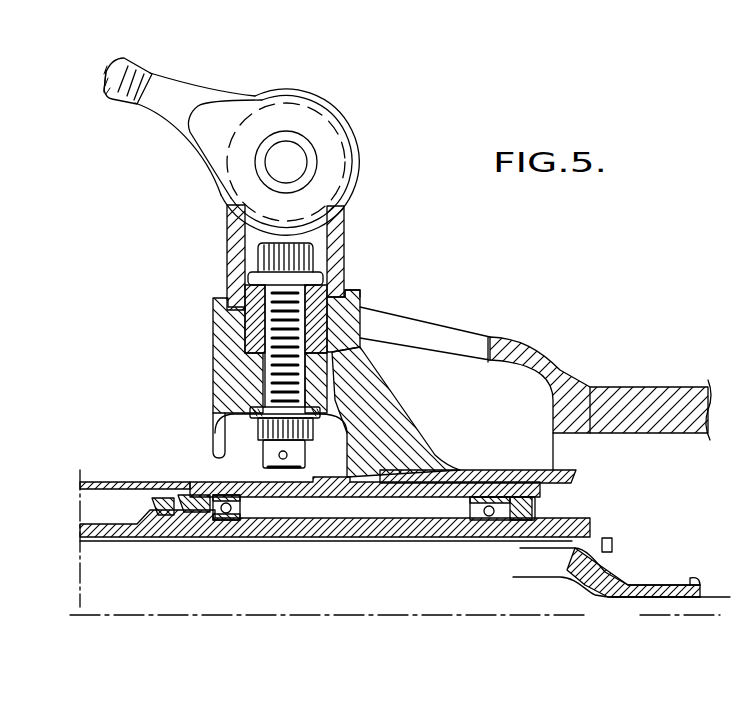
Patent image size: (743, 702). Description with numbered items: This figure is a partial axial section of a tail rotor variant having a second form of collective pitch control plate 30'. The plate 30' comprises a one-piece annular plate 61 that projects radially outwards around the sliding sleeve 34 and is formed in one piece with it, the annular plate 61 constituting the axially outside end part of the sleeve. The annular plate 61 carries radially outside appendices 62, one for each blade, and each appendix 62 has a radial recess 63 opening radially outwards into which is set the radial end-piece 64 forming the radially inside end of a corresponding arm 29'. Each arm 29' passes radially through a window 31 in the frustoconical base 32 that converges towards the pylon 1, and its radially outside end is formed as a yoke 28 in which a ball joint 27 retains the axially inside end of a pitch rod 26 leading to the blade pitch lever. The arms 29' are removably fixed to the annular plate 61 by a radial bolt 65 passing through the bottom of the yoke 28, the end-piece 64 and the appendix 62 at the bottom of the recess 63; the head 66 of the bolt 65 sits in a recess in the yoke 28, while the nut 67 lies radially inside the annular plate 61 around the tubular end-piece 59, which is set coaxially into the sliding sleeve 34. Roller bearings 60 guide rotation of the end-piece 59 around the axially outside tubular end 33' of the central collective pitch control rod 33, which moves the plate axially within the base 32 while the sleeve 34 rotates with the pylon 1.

The pylon 1 is at (672, 407).
The pitch rod 26 is at (163, 95).
The ball joint 27 is at (315, 125).
The yoke 28 is at (330, 223).
The arm 29' is at (395, 277).
The pitch control plate 30' is at (412, 412).
The window 31 is at (440, 342).
The frustoconical base 32 is at (527, 360).
The collective pitch control rod 33 is at (671, 633).
The axially outside tubular end 33' is at (606, 551).
The sliding sleeve 34 is at (560, 474).
The tubular end-piece 59 is at (108, 482).
The roller bearings 60 is at (230, 520).
The annular plate 61 is at (218, 410).
The appendix 62 is at (232, 358).
The radial recess 63 is at (345, 337).
The radial end-piece 64 is at (258, 338).
The radial bolt 65 is at (293, 300).
The head 66 is at (282, 250).
The nut 67 is at (275, 452).